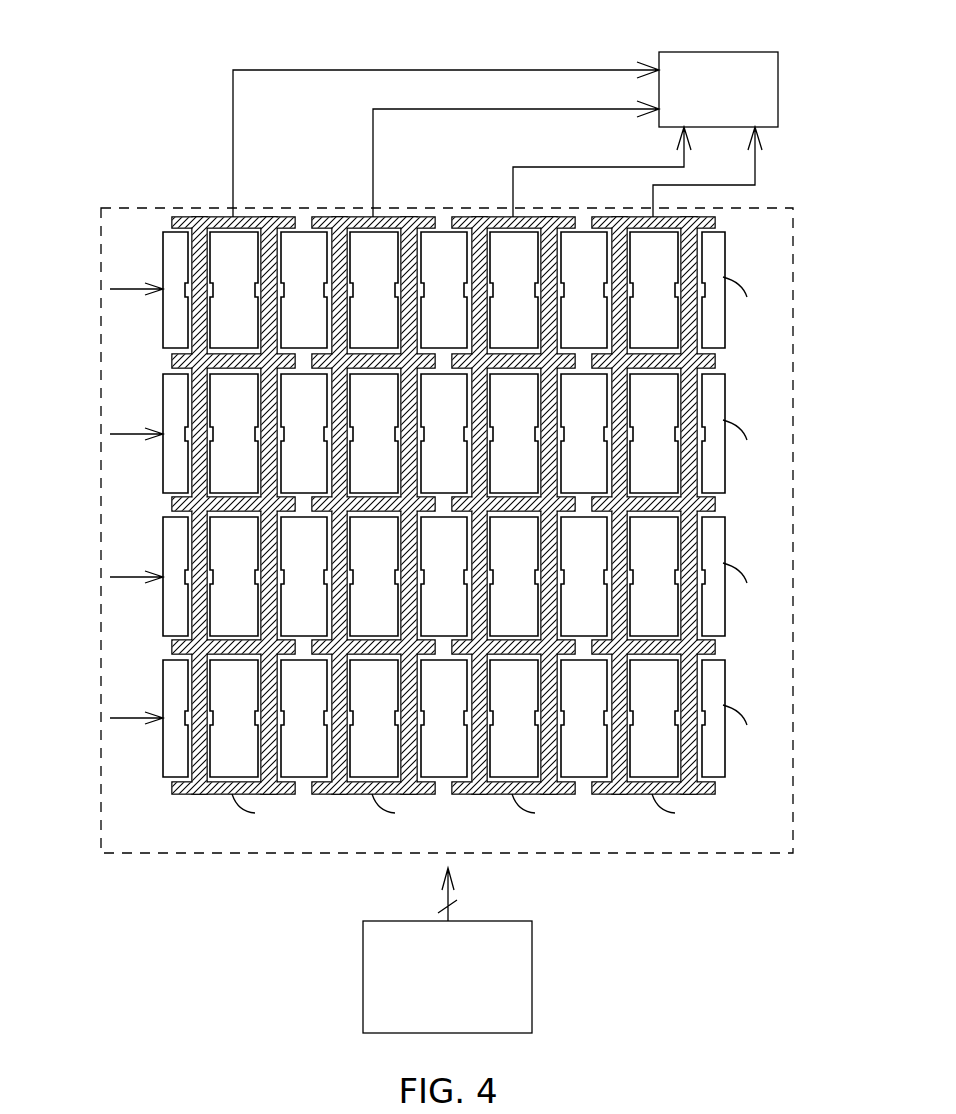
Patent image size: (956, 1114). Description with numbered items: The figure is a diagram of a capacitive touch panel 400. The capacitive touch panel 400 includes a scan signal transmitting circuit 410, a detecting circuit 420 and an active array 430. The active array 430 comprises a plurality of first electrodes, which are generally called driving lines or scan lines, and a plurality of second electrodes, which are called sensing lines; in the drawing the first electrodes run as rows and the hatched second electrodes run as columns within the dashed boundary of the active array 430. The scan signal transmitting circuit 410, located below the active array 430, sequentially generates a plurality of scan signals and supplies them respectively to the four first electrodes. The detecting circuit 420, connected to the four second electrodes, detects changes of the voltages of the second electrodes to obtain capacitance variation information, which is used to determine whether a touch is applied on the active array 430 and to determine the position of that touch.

The capacitive touch panel 400 is at (210, 65).
The scan signal transmitting circuit 410 is at (363, 978).
The detecting circuit 420 is at (718, 52).
The active array 430 is at (663, 853).